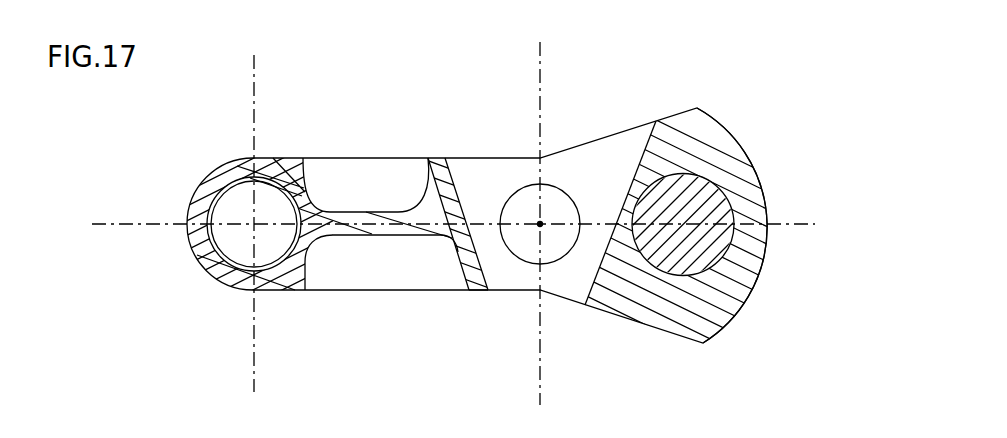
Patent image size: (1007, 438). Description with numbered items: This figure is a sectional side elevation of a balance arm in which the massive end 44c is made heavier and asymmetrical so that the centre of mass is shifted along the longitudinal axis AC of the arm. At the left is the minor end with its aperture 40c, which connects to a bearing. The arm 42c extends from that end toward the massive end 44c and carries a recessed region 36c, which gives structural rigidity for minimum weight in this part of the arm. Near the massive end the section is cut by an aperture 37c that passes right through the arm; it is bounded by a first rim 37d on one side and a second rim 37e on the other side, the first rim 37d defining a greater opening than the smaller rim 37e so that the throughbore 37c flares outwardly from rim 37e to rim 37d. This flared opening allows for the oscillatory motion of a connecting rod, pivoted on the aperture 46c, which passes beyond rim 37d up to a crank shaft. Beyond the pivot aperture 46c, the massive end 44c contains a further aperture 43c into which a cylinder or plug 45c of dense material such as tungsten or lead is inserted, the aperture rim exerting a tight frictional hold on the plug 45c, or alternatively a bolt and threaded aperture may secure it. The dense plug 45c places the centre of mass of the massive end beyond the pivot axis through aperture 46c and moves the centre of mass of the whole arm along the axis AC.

The aperture 40c is at (237, 212).
The arm 42c is at (355, 215).
The recessed region 36c is at (393, 273).
The first rim 37d is at (467, 155).
The second rim 37e is at (505, 292).
The aperture 37c is at (567, 282).
The aperture 46c is at (548, 210).
The massive end 44c is at (702, 102).
The plug 45c is at (737, 212).
The aperture 43c is at (720, 258).
The longitudinal axis AC is at (800, 226).